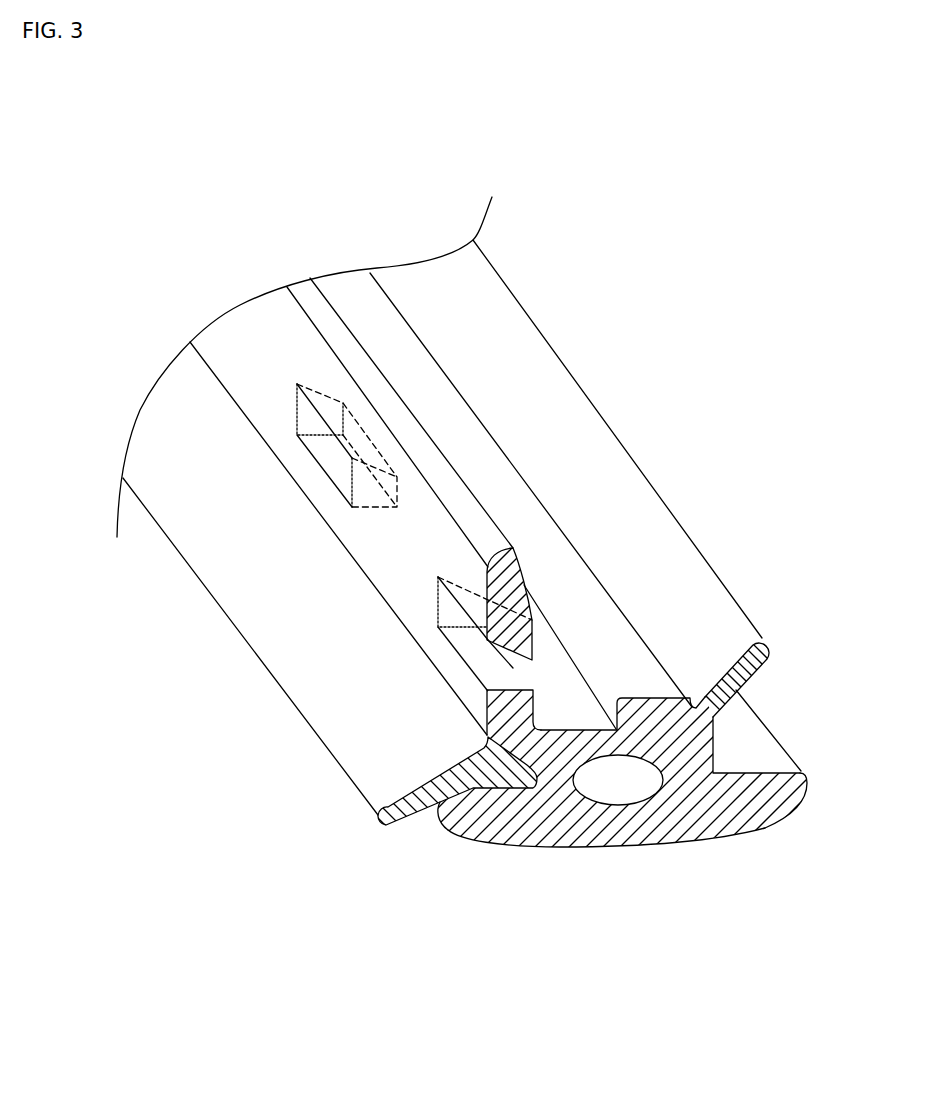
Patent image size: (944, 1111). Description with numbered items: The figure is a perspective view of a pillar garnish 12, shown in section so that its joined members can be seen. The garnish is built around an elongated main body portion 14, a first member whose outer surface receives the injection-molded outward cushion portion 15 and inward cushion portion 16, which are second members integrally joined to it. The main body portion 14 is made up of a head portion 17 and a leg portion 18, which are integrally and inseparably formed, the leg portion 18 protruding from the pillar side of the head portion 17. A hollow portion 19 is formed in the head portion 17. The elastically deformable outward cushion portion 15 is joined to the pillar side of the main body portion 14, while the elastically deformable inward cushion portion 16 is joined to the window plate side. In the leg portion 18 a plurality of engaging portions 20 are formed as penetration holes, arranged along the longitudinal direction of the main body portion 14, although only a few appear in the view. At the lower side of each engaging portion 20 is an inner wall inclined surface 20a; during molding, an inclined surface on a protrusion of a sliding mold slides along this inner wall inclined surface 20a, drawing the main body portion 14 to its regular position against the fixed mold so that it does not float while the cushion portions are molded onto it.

The pillar garnish 12 is at (710, 888).
The main body portion 14 is at (557, 851).
The outward cushion portion 15 is at (400, 823).
The inward cushion portion 16 is at (762, 673).
The head portion 17 is at (602, 850).
The leg portion 18 is at (488, 573).
The hollow portion 19 is at (623, 787).
The engaging portion 20 is at (337, 468).
The inner wall inclined surface 20a is at (327, 424).